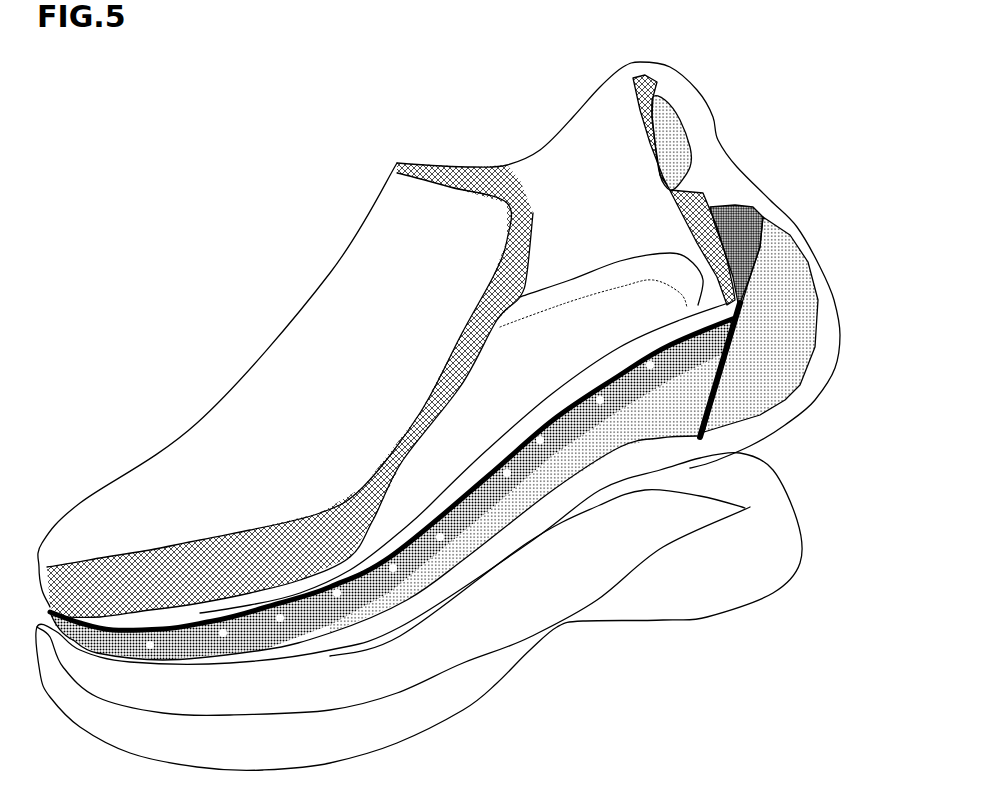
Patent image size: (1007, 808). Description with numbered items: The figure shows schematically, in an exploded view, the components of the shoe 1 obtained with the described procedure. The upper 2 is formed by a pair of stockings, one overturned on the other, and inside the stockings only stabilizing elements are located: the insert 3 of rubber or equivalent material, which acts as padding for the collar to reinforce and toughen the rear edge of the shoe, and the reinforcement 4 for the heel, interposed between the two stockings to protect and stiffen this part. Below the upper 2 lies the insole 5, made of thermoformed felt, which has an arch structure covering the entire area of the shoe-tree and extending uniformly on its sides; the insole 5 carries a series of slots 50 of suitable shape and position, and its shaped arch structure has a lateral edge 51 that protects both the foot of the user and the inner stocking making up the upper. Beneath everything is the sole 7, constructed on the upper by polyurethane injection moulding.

The shoe 1 is at (817, 87).
The upper 2 is at (345, 245).
The insert 3 is at (663, 133).
The reinforcement for the heel 4 is at (768, 288).
The insole 5 is at (643, 387).
The slots 50 is at (673, 357).
The lateral edge 51 is at (607, 427).
The sole 7 is at (763, 572).